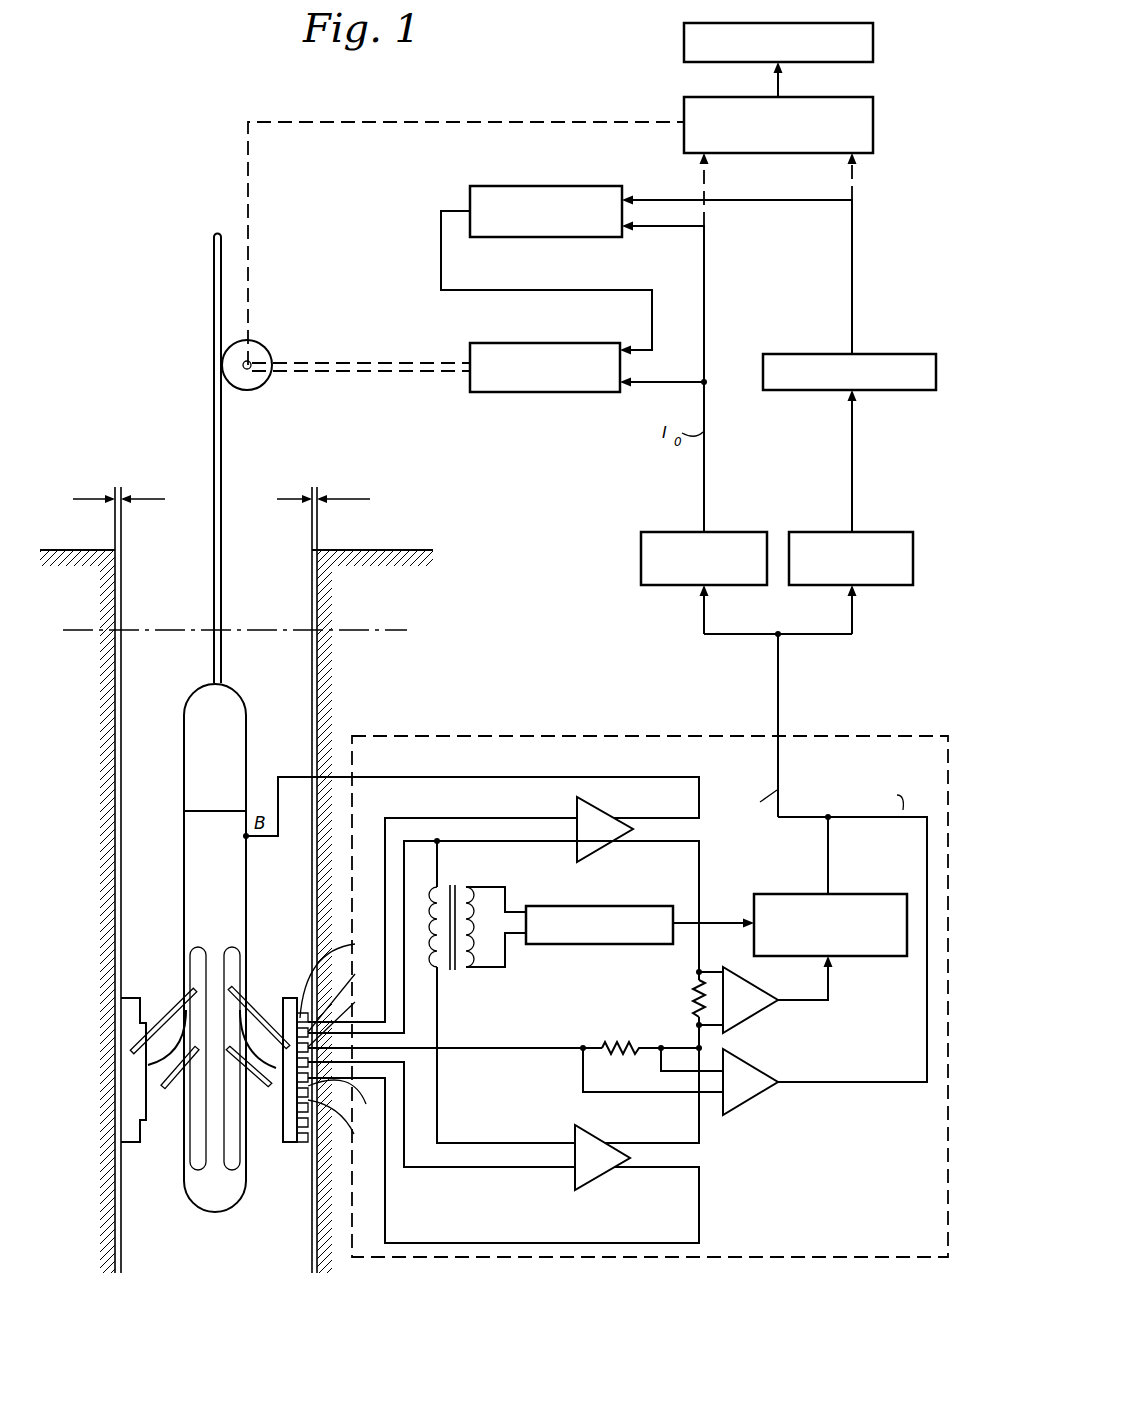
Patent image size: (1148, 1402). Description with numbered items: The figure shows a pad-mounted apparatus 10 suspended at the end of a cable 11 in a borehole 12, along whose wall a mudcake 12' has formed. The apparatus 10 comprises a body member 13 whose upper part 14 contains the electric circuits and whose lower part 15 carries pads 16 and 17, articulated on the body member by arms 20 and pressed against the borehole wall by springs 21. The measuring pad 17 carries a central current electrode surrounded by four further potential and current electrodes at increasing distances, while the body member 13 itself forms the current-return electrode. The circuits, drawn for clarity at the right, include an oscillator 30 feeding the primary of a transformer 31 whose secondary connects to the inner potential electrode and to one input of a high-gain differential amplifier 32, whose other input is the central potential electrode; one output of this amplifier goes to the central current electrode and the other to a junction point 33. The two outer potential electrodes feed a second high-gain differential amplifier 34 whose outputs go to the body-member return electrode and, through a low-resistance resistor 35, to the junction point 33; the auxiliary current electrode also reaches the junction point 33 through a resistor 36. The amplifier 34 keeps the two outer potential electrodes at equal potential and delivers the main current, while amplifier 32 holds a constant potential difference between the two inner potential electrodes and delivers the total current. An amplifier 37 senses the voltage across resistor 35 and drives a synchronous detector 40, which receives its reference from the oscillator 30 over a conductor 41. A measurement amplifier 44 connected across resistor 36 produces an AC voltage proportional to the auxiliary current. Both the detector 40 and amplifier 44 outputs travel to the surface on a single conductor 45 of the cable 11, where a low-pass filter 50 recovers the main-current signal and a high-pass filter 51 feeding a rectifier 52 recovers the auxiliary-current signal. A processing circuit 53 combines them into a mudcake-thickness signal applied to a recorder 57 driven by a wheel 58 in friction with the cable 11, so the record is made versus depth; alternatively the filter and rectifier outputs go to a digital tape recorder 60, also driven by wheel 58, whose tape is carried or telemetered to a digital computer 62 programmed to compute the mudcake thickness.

The apparatus 10 is at (184, 830).
The cable 11 is at (213, 656).
The borehole 12 is at (236, 880).
The mudcake 12' is at (221, 537).
The body member 13 is at (193, 912).
The upper part 14 is at (184, 736).
The lower part 15 is at (212, 1152).
The pad 16 is at (132, 1143).
The measuring pad 17 is at (297, 1148).
The arms 20 is at (160, 1027).
The springs 21 is at (172, 1093).
The oscillator 30 is at (653, 947).
The transformer 31 is at (462, 973).
The high-gain differential amplifier 32 is at (575, 1132).
The junction point 33 is at (702, 1047).
The high-gain differential amplifier 34 is at (597, 803).
The resistor 35 is at (693, 992).
The resistor 36 is at (620, 1017).
The amplifier 37 is at (758, 985).
The synchronous detector 40 is at (863, 957).
The conductor 41 is at (718, 920).
The measurement amplifier 44 is at (777, 1077).
The conductor 45 is at (778, 705).
The low-pass filter 50 is at (742, 530).
The high-pass filter 51 is at (882, 530).
The rectifier 52 is at (903, 352).
The processing circuit 53 is at (553, 160).
The recorder 57 is at (507, 393).
The wheel 58 is at (262, 388).
The digital tape recorder 60 is at (684, 107).
The digital computer 62 is at (684, 41).